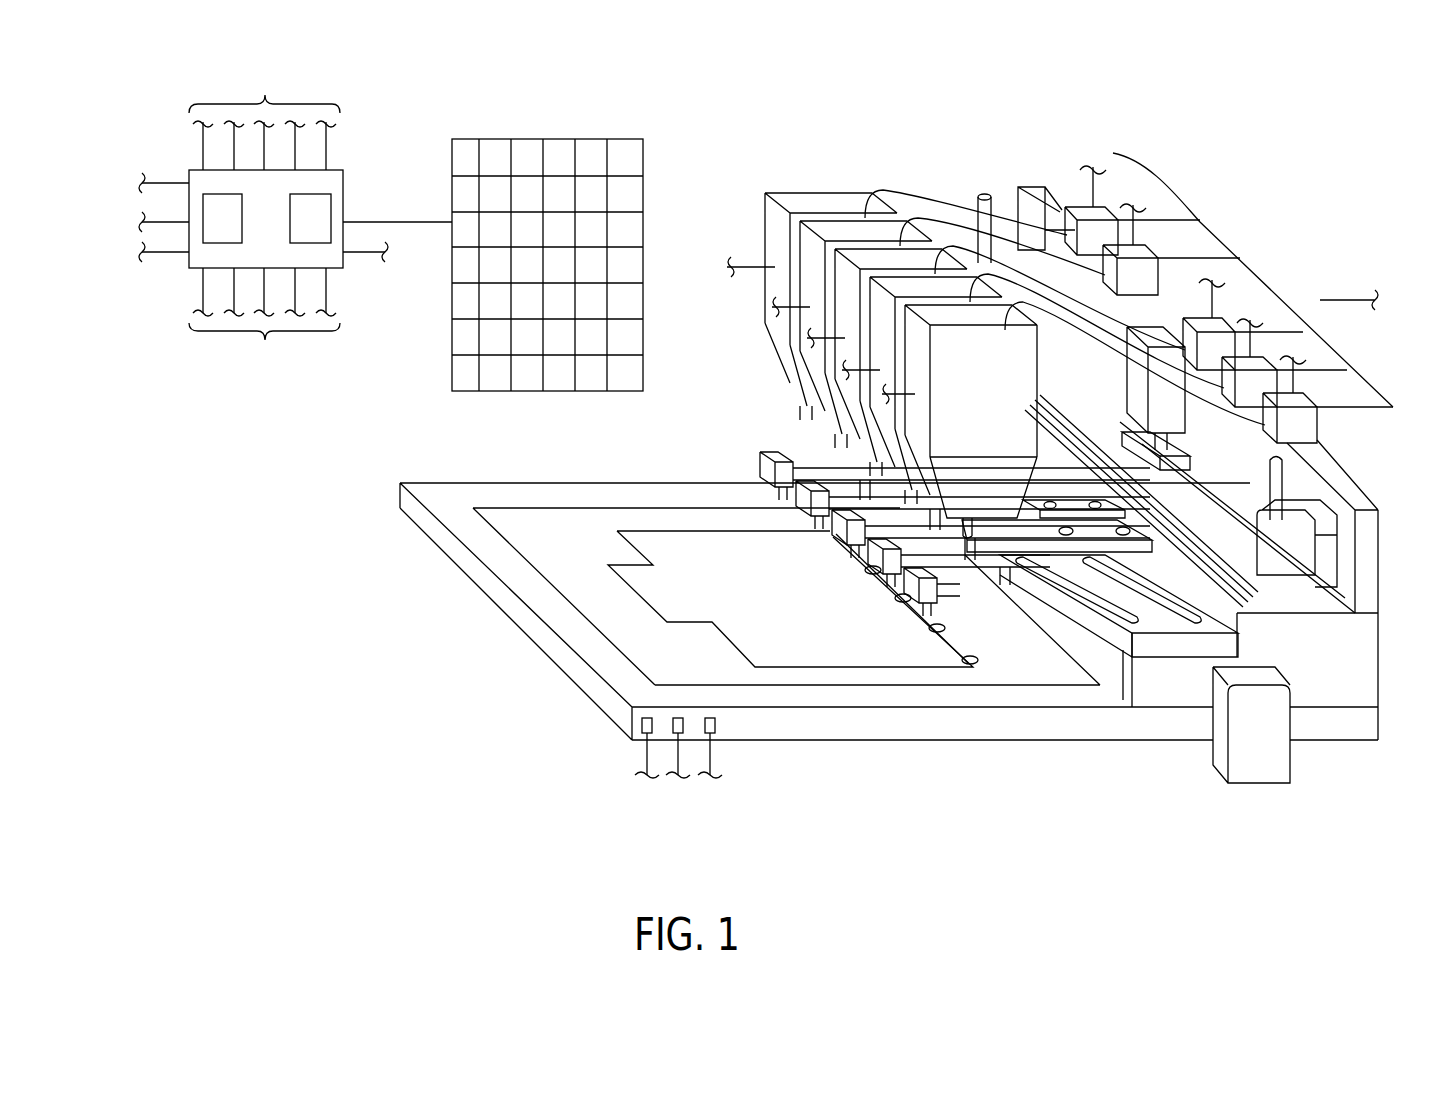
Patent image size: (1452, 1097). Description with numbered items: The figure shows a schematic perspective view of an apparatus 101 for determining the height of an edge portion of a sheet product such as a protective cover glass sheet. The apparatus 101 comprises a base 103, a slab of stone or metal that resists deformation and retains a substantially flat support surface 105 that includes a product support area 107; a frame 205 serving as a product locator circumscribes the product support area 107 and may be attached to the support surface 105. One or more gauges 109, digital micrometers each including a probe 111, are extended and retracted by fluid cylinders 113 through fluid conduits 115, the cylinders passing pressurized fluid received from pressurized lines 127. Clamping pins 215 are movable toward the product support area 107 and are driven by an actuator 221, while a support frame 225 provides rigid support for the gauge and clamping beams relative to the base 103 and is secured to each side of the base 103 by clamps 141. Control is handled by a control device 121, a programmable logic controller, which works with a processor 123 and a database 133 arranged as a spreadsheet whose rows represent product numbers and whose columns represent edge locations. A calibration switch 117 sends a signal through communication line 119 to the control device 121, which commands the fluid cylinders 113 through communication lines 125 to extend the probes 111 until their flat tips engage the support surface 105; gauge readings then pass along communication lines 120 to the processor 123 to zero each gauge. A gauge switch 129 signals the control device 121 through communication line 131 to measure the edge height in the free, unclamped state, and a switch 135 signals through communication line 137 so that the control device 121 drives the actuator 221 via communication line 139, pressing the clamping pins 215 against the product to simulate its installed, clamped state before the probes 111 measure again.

The apparatus 101 is at (1300, 130).
The base 103 is at (917, 790).
The support surface 105 is at (485, 497).
The product support area 107 is at (685, 565).
The gauges 109 is at (765, 225).
The probe 111 is at (972, 560).
The fluid cylinders 113 is at (1080, 213).
The fluid conduits 115 is at (1075, 230).
The calibration switch 117 is at (640, 727).
The communication line 119 is at (153, 183).
The communication lines 120 is at (765, 389).
The control device 121 is at (332, 205).
The processor 123 is at (203, 208).
The communication lines 125 is at (1253, 240).
The pressurized lines 127 is at (1393, 407).
The gauge switch 129 is at (680, 730).
The communication line 131 is at (157, 221).
The database 133 is at (645, 133).
The switch 135 is at (717, 722).
The communication line 137 is at (167, 256).
The communication line 139 is at (360, 253).
The clamps 141 is at (1275, 760).
The frame 205 is at (583, 520).
The clamping pin 215 is at (777, 498).
The actuator 221 is at (1182, 428).
The support frame 225 is at (1378, 495).